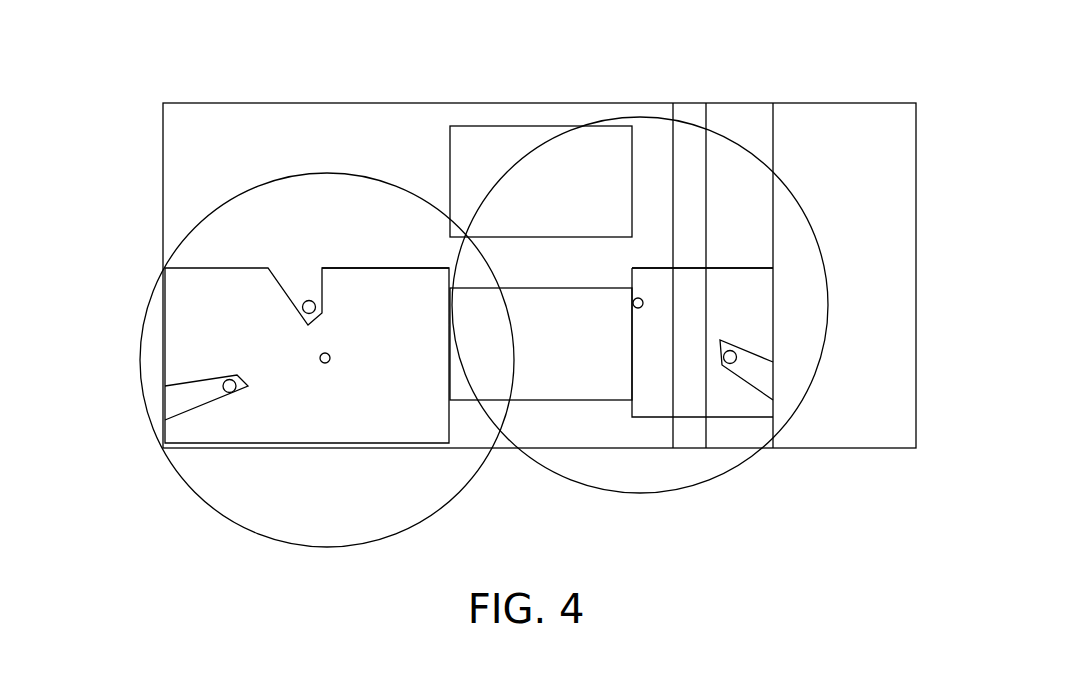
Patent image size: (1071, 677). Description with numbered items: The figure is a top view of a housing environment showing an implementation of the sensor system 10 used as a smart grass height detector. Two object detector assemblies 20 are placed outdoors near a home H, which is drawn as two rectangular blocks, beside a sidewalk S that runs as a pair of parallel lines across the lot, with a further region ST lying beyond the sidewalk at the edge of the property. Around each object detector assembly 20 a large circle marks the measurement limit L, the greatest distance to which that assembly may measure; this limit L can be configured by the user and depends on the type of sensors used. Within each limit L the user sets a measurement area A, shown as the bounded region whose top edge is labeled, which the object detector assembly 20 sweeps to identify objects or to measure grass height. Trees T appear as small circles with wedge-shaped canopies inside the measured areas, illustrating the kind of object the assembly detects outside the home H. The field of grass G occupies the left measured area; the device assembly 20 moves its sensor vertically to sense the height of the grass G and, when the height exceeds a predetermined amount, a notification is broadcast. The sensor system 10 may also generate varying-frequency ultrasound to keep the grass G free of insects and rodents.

The sensor system 10 is at (851, 61).
The object detector assembly 20 is at (326, 352).
The measurement area A is at (343, 267).
The tree T is at (308, 299).
The sidewalk S is at (685, 147).
The stop ST is at (885, 170).
The measurement limit L is at (140, 363).
The home H is at (482, 147).
The grass G is at (344, 423).